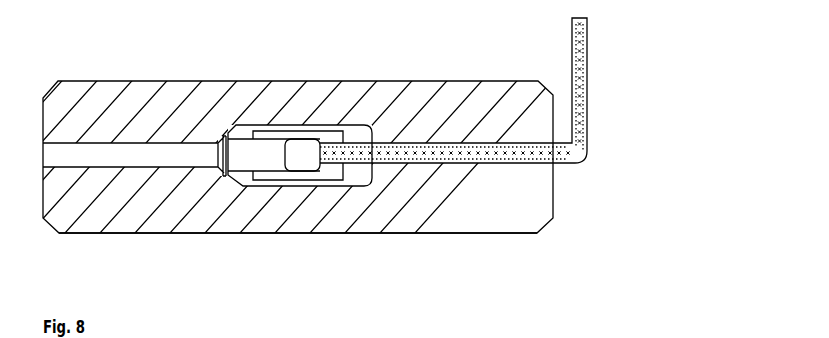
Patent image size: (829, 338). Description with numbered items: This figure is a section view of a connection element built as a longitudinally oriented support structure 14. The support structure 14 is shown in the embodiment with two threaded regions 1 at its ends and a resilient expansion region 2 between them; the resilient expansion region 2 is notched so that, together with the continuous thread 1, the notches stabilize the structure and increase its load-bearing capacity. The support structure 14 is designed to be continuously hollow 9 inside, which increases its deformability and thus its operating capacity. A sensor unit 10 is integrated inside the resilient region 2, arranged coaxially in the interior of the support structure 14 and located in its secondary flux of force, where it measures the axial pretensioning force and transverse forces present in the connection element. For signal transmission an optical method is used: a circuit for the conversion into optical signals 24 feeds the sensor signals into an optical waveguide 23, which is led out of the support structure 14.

The threaded region 1 is at (100, 235).
The resilient region 2 is at (322, 231).
The hollow 9 is at (75, 155).
The sensor unit 10 is at (238, 131).
The support structure 14 is at (448, 102).
The optical waveguide 23 is at (588, 102).
The circuit for the conversion into optical signals 24 is at (304, 150).